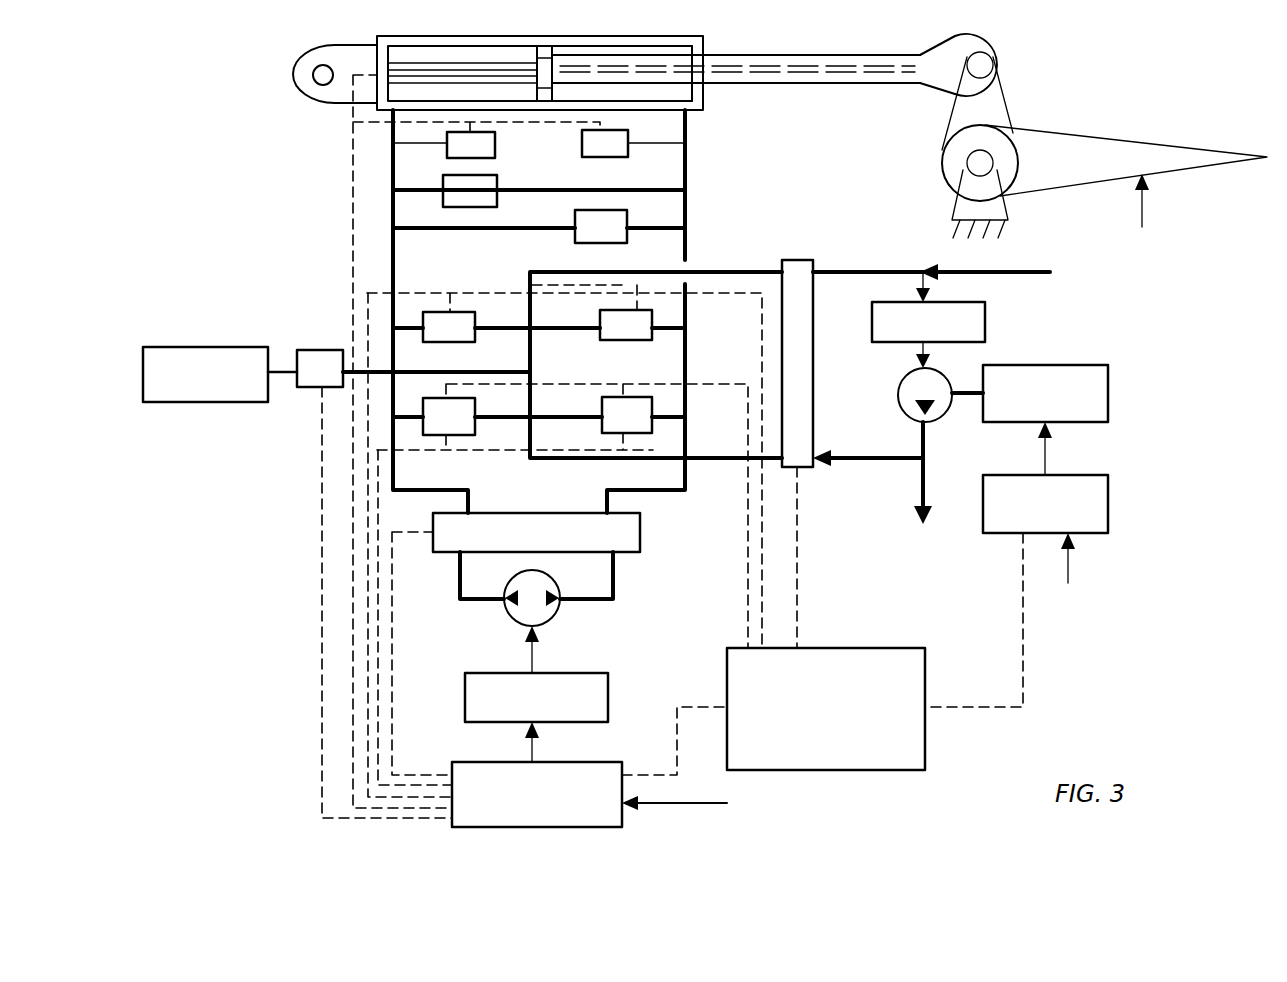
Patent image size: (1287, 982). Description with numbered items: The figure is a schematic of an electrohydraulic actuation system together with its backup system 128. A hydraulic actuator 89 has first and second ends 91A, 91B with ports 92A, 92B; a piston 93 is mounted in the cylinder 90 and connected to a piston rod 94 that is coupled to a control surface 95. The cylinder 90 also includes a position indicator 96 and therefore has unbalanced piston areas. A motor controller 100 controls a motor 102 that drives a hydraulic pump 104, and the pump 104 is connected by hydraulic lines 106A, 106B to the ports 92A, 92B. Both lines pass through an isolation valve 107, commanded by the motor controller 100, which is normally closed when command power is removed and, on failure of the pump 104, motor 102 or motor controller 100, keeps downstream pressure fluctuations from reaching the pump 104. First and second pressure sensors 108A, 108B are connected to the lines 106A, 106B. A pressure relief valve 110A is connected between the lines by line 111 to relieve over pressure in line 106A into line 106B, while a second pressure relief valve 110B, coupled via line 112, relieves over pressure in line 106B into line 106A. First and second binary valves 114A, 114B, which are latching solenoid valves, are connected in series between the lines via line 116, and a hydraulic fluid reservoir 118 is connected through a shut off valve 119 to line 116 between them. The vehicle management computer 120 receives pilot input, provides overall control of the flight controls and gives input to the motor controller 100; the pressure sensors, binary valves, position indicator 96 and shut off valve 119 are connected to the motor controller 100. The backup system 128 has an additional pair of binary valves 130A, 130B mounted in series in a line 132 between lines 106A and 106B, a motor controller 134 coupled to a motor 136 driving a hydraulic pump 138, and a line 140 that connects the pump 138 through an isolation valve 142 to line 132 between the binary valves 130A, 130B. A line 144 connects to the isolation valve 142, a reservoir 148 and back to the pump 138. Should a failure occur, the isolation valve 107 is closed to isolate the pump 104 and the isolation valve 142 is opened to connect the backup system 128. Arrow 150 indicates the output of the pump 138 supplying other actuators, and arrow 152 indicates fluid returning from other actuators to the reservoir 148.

The hydraulic actuator 89 is at (722, 40).
The cylinder 90 is at (686, 122).
The first end 91A is at (703, 102).
The port 92A is at (770, 99).
The second end 91B is at (380, 117).
The port 92B is at (294, 104).
The piston 93 is at (545, 105).
The piston rod 94 is at (890, 86).
The control surface 95 is at (1104, 147).
The position indicator 96 is at (425, 84).
The motor controller 100 is at (589, 774).
The motor 102 is at (536, 674).
The hydraulic pump 104 is at (560, 605).
The hydraulic line 106A is at (686, 240).
The hydraulic line 106B is at (393, 245).
The isolation valve 107 is at (536, 532).
The first pressure sensor 108A is at (628, 156).
The second pressure sensor 108B is at (447, 150).
The pressure relief valve 110A is at (627, 240).
The second pressure relief valve 110B is at (443, 192).
The line 111 is at (427, 232).
The line 112 is at (650, 192).
The first binary valve 114A is at (652, 434).
The second binary valve 114B is at (423, 425).
The line 116 is at (567, 420).
The hydraulic fluid reservoir 118 is at (220, 374).
The shut off valve 119 is at (413, 368).
The vehicle management computer 120 is at (826, 709).
The backup system 128 is at (1052, 349).
The binary valve 130A is at (652, 335).
The binary valve 130B is at (475, 332).
The line 132 is at (567, 327).
The motor controller 134 is at (1045, 529).
The motor 136 is at (1045, 420).
The hydraulic pump 138 is at (935, 420).
The line 140 is at (868, 457).
The isolation valve 142 is at (805, 468).
The line 144 is at (723, 274).
The reservoir 148 is at (928, 307).
The arrow 150 is at (920, 495).
The arrow 152 is at (1020, 276).